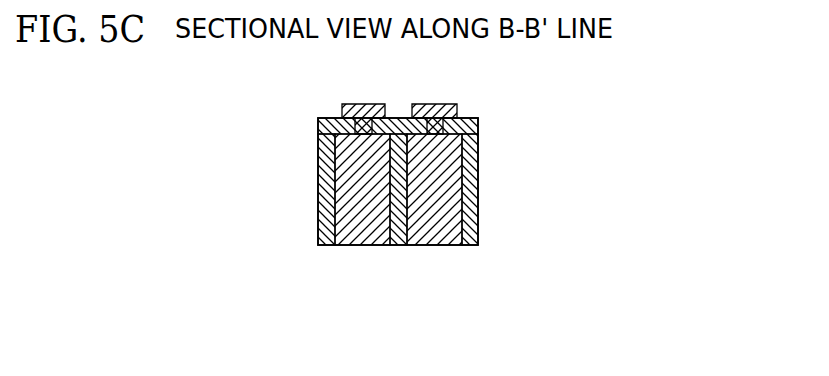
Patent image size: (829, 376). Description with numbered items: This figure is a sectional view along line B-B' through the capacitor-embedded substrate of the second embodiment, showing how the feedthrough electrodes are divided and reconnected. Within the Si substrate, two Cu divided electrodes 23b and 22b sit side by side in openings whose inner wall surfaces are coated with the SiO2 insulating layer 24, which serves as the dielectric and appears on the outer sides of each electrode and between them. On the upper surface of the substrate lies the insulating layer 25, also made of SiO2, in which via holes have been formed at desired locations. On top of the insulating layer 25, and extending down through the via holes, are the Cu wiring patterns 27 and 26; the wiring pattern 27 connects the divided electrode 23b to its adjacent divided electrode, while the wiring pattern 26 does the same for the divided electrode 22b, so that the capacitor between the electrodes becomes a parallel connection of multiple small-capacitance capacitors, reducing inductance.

The divided electrode 22b is at (432, 232).
The divided electrode 23b is at (368, 233).
The insulating layer 24 is at (322, 213).
The insulating layer 25 is at (480, 121).
The wiring pattern 26 is at (440, 113).
The wiring pattern 27 is at (365, 111).